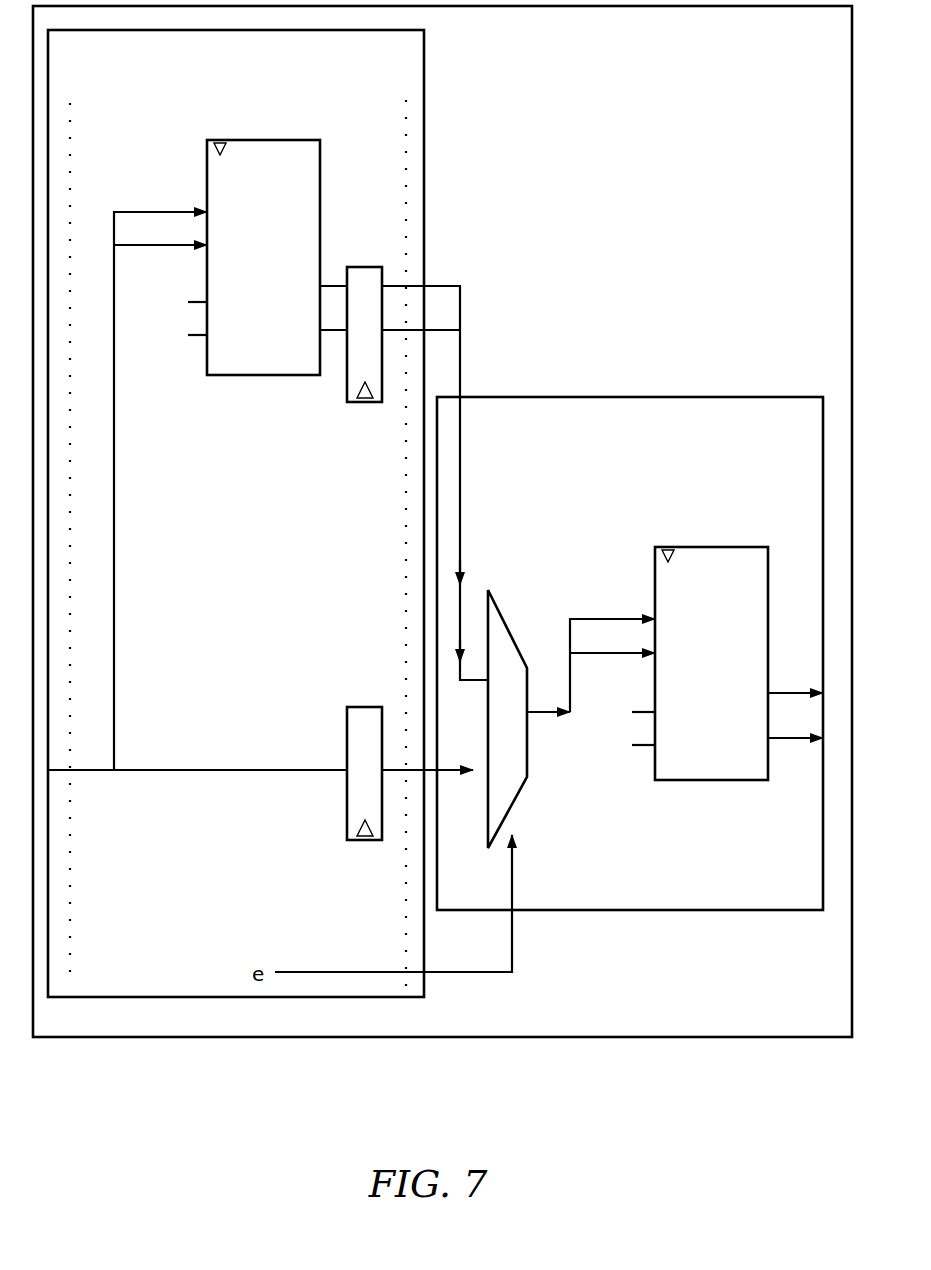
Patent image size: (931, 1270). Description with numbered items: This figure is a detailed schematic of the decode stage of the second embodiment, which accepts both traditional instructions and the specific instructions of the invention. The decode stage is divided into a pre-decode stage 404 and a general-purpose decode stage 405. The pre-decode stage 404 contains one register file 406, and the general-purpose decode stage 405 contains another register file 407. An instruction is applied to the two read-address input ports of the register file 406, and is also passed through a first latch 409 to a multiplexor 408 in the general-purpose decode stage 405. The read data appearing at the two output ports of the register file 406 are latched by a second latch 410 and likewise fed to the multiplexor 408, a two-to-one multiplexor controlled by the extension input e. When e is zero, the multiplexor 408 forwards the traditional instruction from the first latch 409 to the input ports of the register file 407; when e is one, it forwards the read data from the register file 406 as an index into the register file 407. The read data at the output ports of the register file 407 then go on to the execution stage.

The pre-decode stage 404 is at (364, 84).
The general-purpose decode stage 405 is at (748, 482).
The register file 406 is at (286, 376).
The register file 407 is at (697, 547).
The multiplexor 408 is at (505, 620).
The first latch 409 is at (352, 841).
The second latch 410 is at (348, 403).